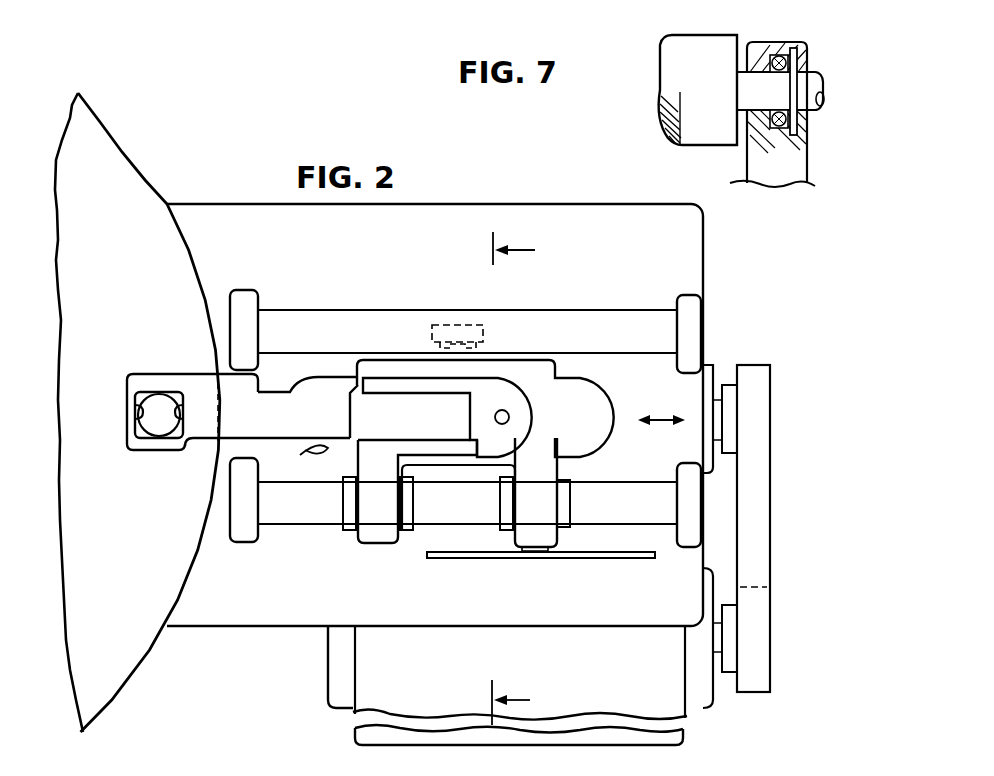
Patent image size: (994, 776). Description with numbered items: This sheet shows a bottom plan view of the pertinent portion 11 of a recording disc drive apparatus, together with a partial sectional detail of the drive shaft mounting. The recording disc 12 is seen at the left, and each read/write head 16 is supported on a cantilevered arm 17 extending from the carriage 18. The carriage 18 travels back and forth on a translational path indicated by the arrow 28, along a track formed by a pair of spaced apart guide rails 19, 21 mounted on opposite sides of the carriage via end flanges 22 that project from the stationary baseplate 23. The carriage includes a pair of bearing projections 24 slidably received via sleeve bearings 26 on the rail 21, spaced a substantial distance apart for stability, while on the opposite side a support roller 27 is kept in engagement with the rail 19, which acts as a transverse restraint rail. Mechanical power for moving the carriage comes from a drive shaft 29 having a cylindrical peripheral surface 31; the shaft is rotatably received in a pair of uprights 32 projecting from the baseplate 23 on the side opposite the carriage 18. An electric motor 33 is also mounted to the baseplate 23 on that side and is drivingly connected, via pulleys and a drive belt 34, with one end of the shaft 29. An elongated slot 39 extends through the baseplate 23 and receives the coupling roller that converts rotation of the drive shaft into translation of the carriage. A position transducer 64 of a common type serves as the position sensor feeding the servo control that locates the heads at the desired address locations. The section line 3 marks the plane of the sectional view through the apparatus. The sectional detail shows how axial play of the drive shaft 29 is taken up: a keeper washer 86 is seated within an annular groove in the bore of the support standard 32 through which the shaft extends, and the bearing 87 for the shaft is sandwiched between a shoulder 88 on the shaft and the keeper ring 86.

In FIG. 2, the section line 3 is at (521, 478).
In FIG. 2, the pertinent portion of recording disc drive apparatus 11 is at (748, 268).
In FIG. 2, the recording disc 12 is at (143, 308).
In FIG. 2, the read/write head 16 is at (169, 421).
In FIG. 2, the cantilevered arm 17 is at (258, 425).
In FIG. 2, the carriage 18 is at (521, 374).
In FIG. 2, the guide rail 19 is at (630, 311).
In FIG. 2, the guide rail 21 is at (630, 496).
In FIG. 2, the end flanges 22 is at (248, 303).
In FIG. 2, the baseplate 23 is at (412, 270).
In FIG. 2, the bearing projections 24 is at (386, 538).
In FIG. 2, the sleeve bearings 26 is at (345, 535).
In FIG. 2, the support roller 27 is at (442, 312).
In FIG. 2, the arrow 28 is at (660, 418).
In FIG. 7, the drive shaft 29 is at (818, 88).
In FIG. 7, the cylindrical peripheral surface 31 is at (707, 70).
In FIG. 7, the upright 32 is at (800, 165).
In FIG. 2, the electric motor 33 is at (640, 675).
In FIG. 2, the drive belt 34 is at (765, 485).
In FIG. 2, the elongated slot 39 is at (306, 455).
In FIG. 2, the position transducer 64 is at (523, 568).
In FIG. 7, the keeper washer 86 is at (800, 62).
In FIG. 7, the bearing 87 is at (780, 58).
In FIG. 7, the shoulder 88 is at (773, 126).